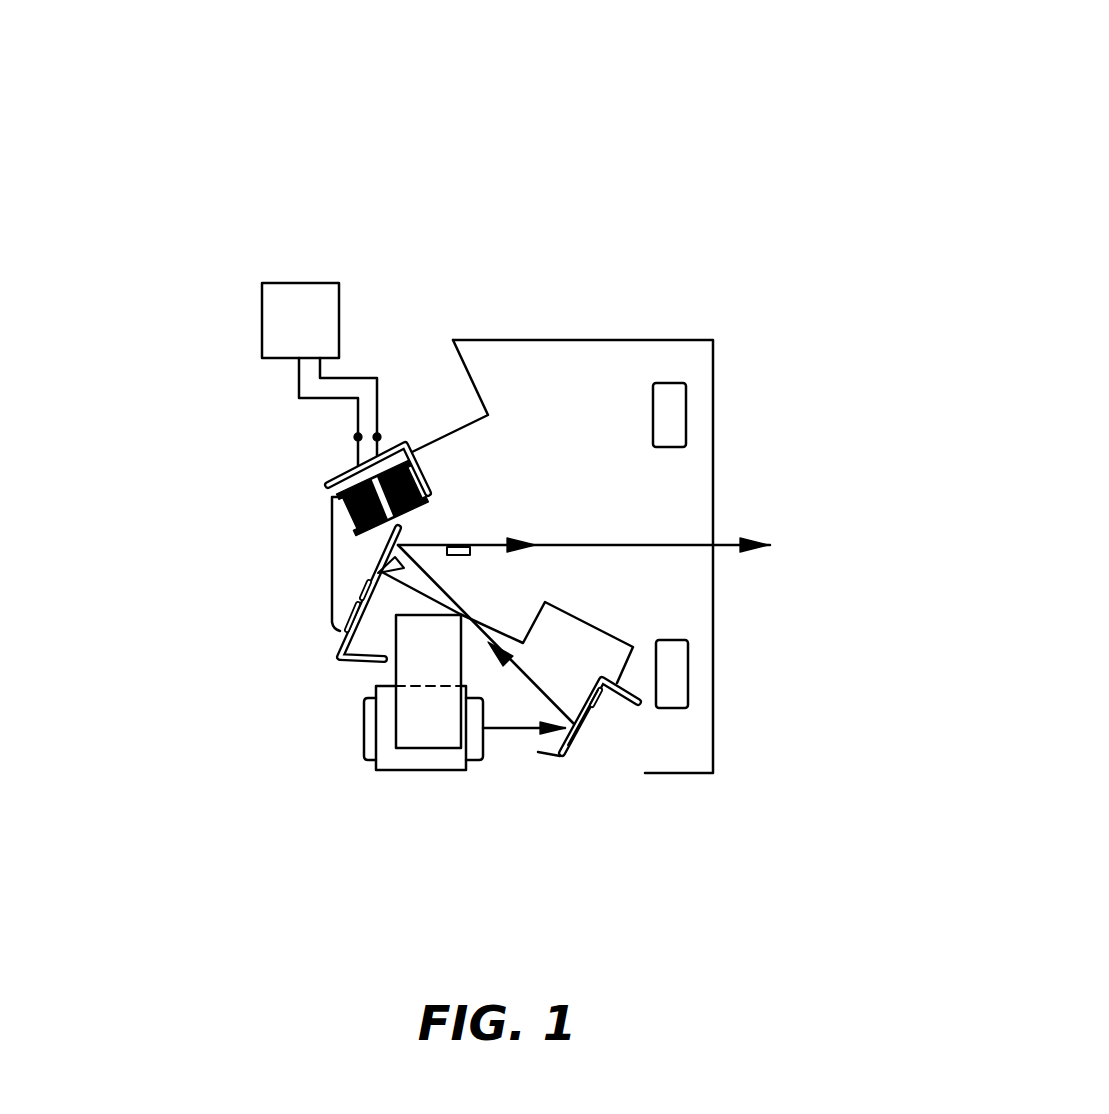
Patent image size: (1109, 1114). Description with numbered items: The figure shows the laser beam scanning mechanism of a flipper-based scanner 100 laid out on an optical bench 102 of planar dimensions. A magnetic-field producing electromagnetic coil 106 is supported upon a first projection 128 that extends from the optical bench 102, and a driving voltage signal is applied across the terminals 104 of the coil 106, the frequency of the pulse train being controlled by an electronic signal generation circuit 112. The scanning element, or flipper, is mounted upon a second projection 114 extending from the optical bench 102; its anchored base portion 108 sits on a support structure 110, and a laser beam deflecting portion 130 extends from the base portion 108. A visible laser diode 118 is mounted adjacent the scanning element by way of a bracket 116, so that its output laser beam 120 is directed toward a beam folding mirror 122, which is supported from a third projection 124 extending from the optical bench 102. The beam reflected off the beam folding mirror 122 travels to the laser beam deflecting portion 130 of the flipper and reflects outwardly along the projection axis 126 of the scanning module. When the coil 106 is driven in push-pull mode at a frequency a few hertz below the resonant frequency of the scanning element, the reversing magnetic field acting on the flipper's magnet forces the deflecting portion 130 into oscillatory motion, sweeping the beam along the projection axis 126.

The scanner 100 is at (799, 128).
The optical bench 102 is at (713, 392).
The terminals 104 is at (378, 450).
The electromagnetic coil 106 is at (357, 510).
The base portion 108 is at (400, 571).
The support structure 110 is at (338, 631).
The electronic signal generation circuit 112 is at (262, 338).
The second projection 114 is at (340, 662).
The bracket 116 is at (410, 703).
The visible laser diode 118 is at (443, 770).
The output laser beam 120 is at (503, 732).
The beam folding mirror 122 is at (538, 752).
The third projection 124 is at (520, 675).
The projection axis 126 is at (683, 541).
The first projection 128 is at (405, 447).
The laser beam deflecting portion 130 is at (400, 538).